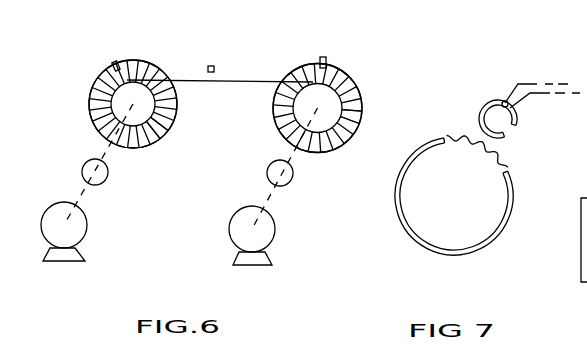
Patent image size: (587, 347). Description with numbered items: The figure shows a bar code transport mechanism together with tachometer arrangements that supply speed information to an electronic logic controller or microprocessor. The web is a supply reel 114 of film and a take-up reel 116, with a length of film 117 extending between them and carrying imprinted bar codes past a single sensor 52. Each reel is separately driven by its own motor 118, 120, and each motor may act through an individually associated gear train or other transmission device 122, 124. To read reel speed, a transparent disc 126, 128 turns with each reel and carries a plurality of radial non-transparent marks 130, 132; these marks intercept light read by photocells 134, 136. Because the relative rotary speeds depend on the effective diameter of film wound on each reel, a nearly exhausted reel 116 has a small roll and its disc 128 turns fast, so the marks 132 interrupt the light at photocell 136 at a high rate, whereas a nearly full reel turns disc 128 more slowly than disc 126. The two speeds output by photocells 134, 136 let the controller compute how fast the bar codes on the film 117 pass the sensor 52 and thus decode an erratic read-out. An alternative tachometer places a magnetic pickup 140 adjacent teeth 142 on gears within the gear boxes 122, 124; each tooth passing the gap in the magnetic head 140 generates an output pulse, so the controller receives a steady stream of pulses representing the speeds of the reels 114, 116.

In FIG. 6, the sensor 52 is at (211, 66).
In FIG. 6, the supply reel 114 is at (129, 80).
In FIG. 6, the take-up reel 116 is at (325, 100).
In FIG. 6, the length of film 117 is at (215, 82).
In FIG. 6, the motor 118 is at (82, 227).
In FIG. 6, the motor 120 is at (258, 230).
In FIG. 6, the gear train 122 is at (108, 177).
In FIG. 6, the gear train 124 is at (290, 182).
In FIG. 6, the transparent disc 126 is at (90, 99).
In FIG. 6, the transparent disc 128 is at (340, 78).
In FIG. 6, the radial non-transparent marks 130 is at (170, 125).
In FIG. 6, the radial non-transparent marks 132 is at (360, 117).
In FIG. 6, the photocell 134 is at (113, 62).
In FIG. 6, the photocell 136 is at (322, 57).
In FIG. 7, the magnetic pickup 140 is at (492, 102).
In FIG. 7, the teeth 142 is at (506, 155).